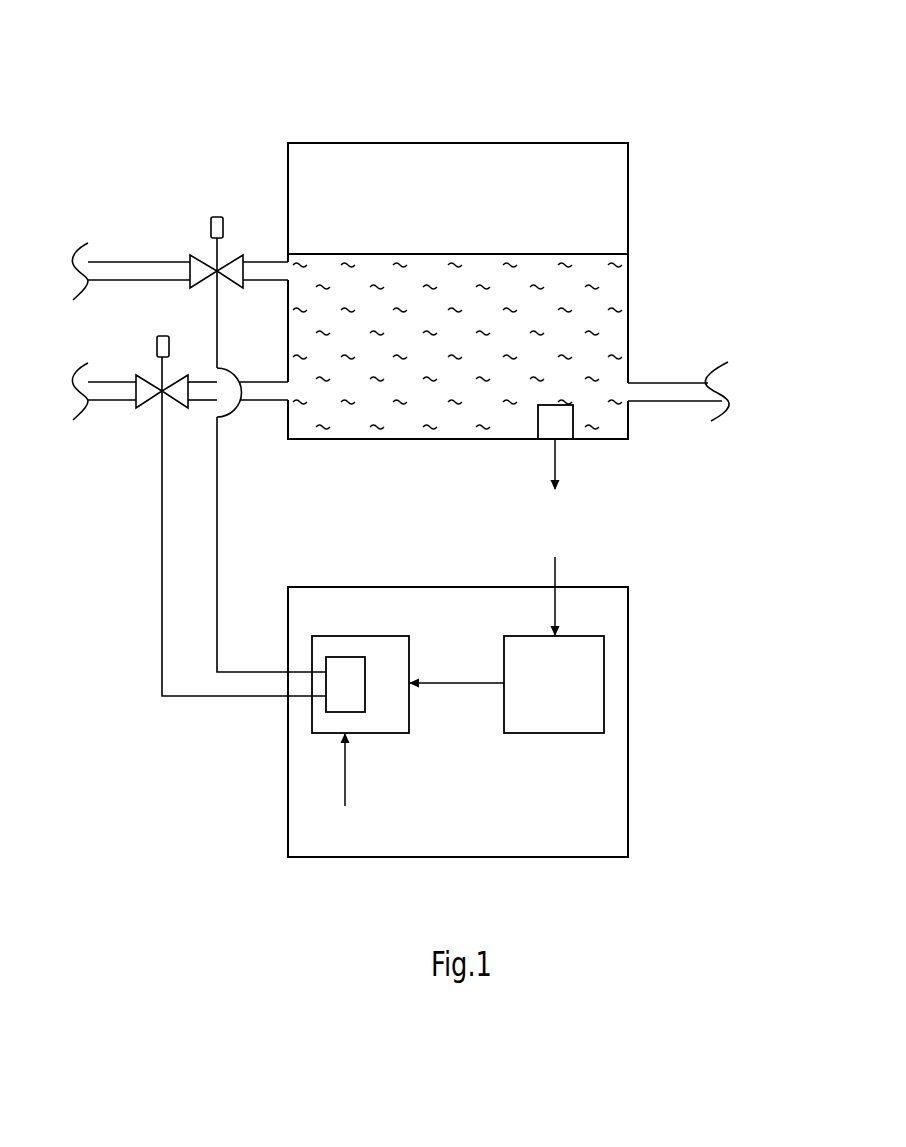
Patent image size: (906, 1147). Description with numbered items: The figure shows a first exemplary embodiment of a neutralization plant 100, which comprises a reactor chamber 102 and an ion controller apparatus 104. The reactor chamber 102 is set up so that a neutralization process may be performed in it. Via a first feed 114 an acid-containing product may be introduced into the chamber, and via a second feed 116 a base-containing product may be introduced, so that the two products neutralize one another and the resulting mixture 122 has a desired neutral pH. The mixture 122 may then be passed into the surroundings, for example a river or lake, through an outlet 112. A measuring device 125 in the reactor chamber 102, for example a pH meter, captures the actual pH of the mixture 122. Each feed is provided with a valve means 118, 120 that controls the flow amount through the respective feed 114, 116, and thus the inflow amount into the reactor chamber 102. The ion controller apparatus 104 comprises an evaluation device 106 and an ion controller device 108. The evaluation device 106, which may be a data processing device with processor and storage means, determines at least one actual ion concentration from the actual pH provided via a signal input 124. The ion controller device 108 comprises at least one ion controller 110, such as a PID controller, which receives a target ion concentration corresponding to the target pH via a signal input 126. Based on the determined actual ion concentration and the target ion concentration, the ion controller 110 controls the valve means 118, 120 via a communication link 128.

The neutralization plant 100 is at (674, 81).
The reactor chamber 102 is at (629, 213).
The ion controller apparatus 104 is at (629, 663).
The evaluation device 106 is at (507, 684).
The ion controller device 108 is at (353, 643).
The ion controller 110 is at (353, 705).
The outlet 112 is at (672, 390).
The first feed 114 is at (115, 270).
The second feed 116 is at (115, 392).
The valve means 118 is at (210, 222).
The valve means 120 is at (157, 345).
The mixture 122 is at (429, 268).
The signal input 124 is at (551, 572).
The measuring device 125 is at (562, 420).
The signal input 126 is at (345, 782).
The communication link 128 is at (217, 583).